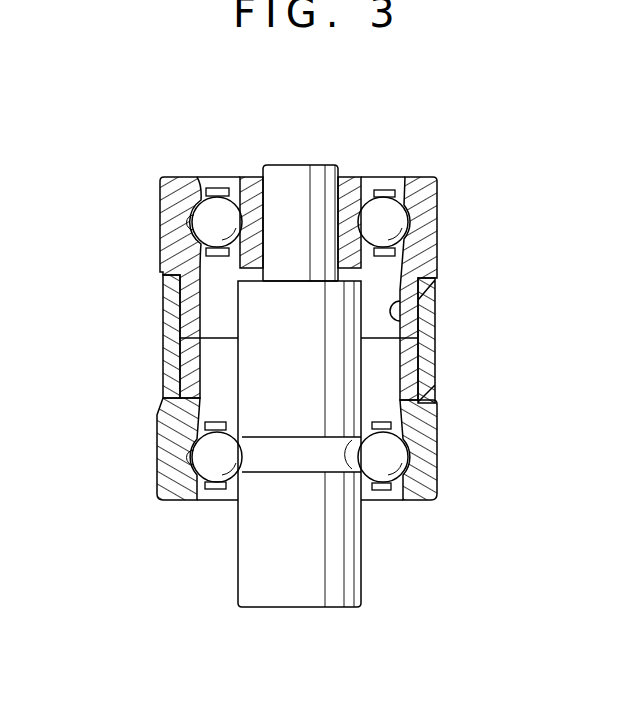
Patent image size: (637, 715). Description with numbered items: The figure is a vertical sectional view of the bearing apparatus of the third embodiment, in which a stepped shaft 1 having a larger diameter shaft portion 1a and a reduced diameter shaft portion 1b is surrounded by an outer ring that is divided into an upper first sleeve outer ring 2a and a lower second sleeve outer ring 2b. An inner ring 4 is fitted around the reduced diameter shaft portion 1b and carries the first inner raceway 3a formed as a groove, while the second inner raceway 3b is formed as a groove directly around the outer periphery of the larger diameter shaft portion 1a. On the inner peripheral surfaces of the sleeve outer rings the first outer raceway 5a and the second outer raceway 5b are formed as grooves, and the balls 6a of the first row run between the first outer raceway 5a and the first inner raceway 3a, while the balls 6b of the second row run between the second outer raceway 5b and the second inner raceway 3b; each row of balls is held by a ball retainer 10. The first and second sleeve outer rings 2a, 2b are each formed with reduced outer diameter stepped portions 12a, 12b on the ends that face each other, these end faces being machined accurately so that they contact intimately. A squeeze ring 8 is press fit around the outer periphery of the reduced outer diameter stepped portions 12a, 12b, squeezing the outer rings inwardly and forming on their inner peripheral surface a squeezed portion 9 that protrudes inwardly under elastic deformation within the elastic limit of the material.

The stepped shaft 1 is at (318, 153).
The larger diameter shaft portion 1a is at (285, 592).
The reduced diameter shaft portion 1b is at (290, 185).
The first sleeve outer ring 2a is at (430, 225).
The second sleeve outer ring 2b is at (430, 466).
The first inner raceway 3a is at (240, 213).
The second inner raceway 3b is at (285, 462).
The inner ring 4 is at (252, 205).
The first outer raceway 5a is at (198, 232).
The second outer raceway 5b is at (193, 463).
The balls for the first row 6a is at (203, 213).
The balls for the second row 6b is at (190, 430).
The squeeze ring 8 is at (427, 346).
The squeezed portion 9 is at (404, 300).
The ball retainer 10 is at (384, 180).
The reduced outer diameter stepped portion 12a is at (436, 300).
The reduced outer diameter stepped portion 12b is at (436, 373).